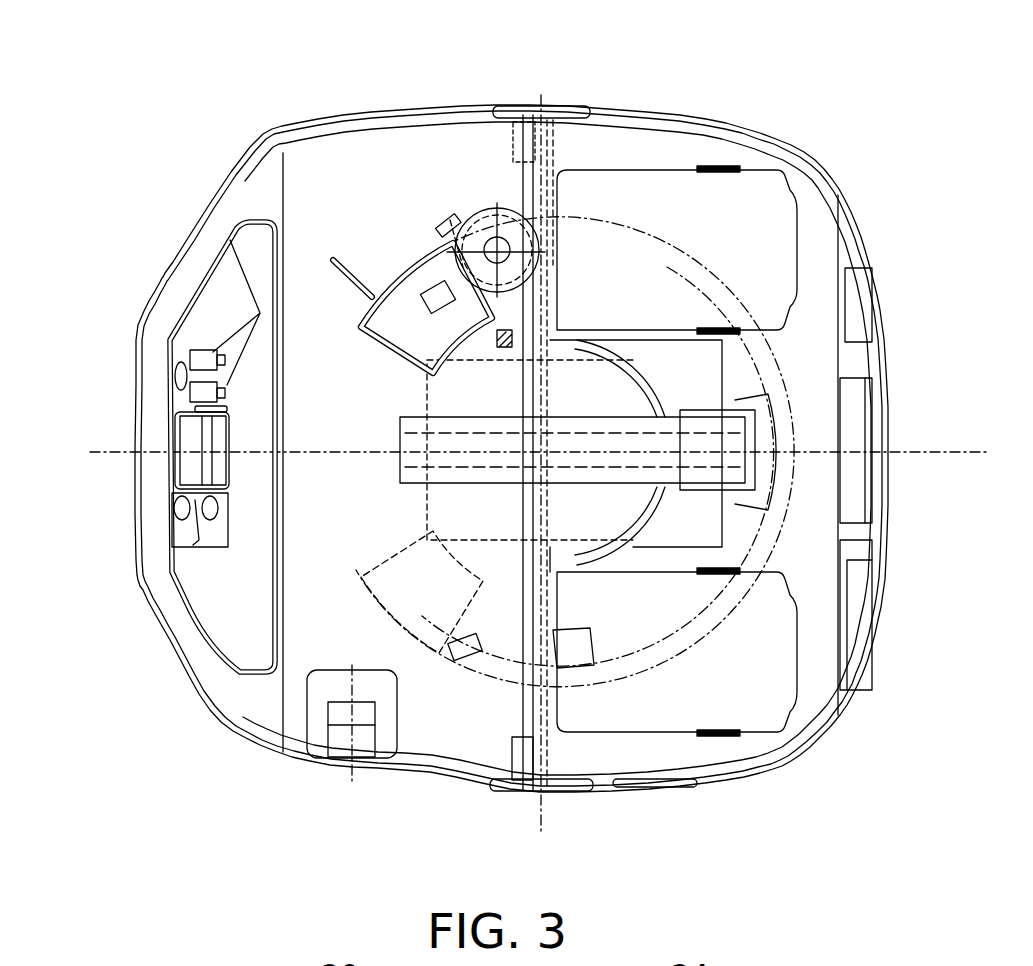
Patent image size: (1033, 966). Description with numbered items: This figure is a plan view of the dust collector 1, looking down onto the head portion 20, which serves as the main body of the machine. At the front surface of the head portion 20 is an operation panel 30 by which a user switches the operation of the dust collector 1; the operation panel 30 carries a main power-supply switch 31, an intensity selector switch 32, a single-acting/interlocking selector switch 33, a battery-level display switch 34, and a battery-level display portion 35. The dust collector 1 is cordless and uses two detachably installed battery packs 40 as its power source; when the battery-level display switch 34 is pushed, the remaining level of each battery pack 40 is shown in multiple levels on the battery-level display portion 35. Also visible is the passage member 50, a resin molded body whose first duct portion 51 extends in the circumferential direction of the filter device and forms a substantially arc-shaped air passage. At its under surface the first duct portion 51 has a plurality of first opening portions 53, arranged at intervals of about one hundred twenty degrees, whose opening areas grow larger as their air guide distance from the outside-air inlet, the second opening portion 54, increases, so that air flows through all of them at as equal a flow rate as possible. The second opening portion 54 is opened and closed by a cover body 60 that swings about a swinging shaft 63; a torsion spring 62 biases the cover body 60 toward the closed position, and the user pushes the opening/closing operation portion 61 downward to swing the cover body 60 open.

The dust collector 1 is at (221, 767).
The head portion 20 is at (255, 133).
The operation panel 30 is at (170, 337).
The main power-supply switch 31 is at (188, 464).
The intensity selector switch 32 is at (182, 512).
The single-acting/interlocking selector switch 33 is at (210, 514).
The battery-level display switch 34 is at (183, 372).
The battery-level display portion 35 is at (217, 302).
The battery pack 40 is at (762, 182).
The passage member 50 is at (765, 340).
The first duct portion 51 is at (730, 288).
The first opening portion 53 is at (437, 225).
The second opening portion 54 is at (402, 298).
The cover body 60 is at (415, 268).
The opening/closing operation portion 61 is at (500, 245).
The torsion spring 62 is at (553, 330).
The swinging shaft 63 is at (455, 213).